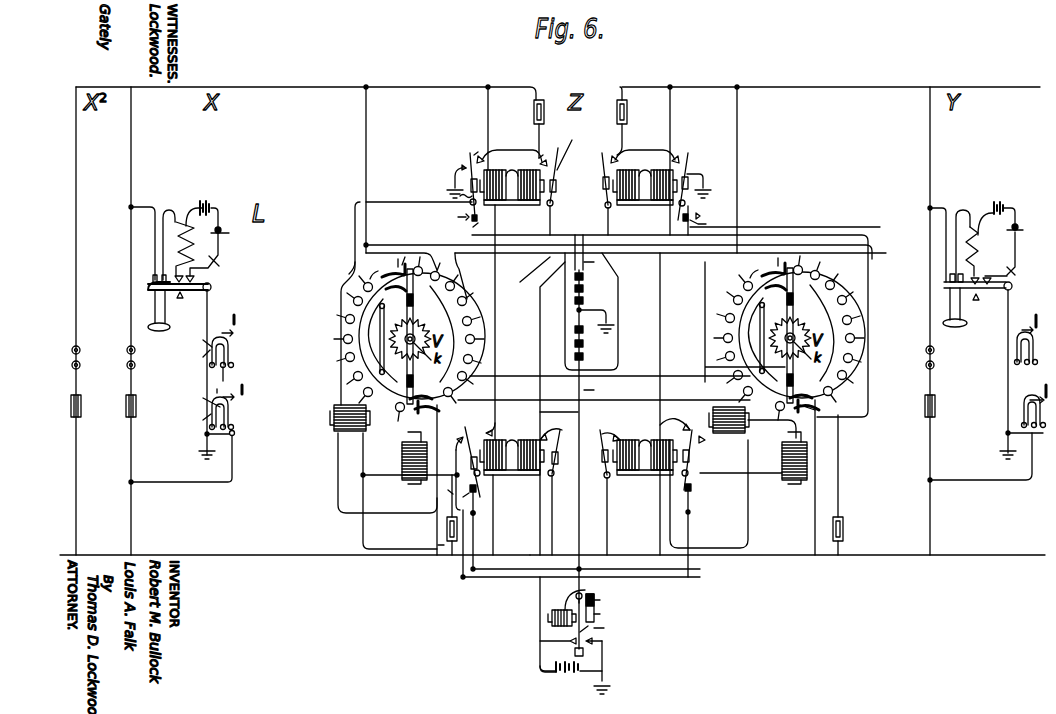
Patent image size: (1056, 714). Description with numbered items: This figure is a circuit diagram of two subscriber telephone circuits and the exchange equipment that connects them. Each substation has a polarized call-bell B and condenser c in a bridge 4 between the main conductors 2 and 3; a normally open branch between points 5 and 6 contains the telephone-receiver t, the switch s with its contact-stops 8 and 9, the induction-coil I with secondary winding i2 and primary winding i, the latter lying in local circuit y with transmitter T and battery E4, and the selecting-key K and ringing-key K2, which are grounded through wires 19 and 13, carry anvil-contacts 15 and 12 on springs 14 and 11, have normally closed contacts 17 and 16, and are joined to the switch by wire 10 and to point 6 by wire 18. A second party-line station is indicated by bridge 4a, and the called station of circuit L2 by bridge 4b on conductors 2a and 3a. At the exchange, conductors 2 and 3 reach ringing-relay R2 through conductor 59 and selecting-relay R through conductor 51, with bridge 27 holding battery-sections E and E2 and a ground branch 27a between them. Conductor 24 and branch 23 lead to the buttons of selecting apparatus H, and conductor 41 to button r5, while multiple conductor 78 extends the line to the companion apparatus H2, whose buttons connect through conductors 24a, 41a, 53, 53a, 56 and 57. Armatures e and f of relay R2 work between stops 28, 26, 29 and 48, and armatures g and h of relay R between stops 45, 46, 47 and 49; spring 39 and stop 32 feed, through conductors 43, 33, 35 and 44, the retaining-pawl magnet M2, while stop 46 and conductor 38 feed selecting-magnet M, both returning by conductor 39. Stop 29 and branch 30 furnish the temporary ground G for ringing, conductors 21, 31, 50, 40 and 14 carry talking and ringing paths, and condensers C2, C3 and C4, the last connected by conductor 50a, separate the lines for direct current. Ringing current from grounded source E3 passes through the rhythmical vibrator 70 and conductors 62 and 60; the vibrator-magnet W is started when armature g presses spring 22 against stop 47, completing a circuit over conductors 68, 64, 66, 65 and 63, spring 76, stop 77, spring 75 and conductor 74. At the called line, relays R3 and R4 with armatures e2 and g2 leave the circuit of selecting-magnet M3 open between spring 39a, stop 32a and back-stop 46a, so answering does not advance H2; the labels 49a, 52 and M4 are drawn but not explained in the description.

The main conductor 2 is at (349, 85).
The line conductor 2a is at (831, 76).
The main conductor 3 is at (295, 567).
The main-line conductor 3a is at (787, 565).
The bridge 4 is at (137, 321).
The bridge 4a is at (85, 321).
The bridge 4b is at (980, 321).
The bridge point 5 is at (135, 240).
The bridge point 6 is at (124, 481).
The upper switch-contact stop 8 is at (175, 273).
The contact-stop 9 is at (195, 274).
The wire 10 is at (213, 369).
The spring 11 is at (201, 340).
The anvil-contact 12 is at (225, 322).
The wire 13 is at (200, 420).
The spring 14 is at (381, 328).
The anvil-contact 15 is at (233, 387).
The separable contact 16 is at (200, 357).
The separable contact 17 is at (204, 400).
The wire 18 is at (181, 468).
The wire 19 is at (229, 439).
The conductor 21 is at (406, 294).
The spring 22 is at (477, 523).
The branch conductor 23 is at (400, 254).
The conductor 24 is at (376, 169).
The conductor 24a is at (717, 169).
The forward stop 26 is at (550, 140).
The bridge conductor 27 is at (591, 419).
The ground branch 27a is at (596, 308).
The forward stop 28 is at (482, 145).
The back contact-stop 29 is at (454, 168).
The ground branch 30 is at (456, 184).
The conductor 31 is at (524, 223).
The auxiliary contact-stop 32 is at (459, 211).
The contact-stop 32a is at (710, 196).
The conductor 33 is at (465, 276).
The conductor 35 is at (410, 467).
The conductor 38 is at (400, 491).
The spring 39 is at (417, 365).
The spring 39a is at (781, 214).
The conductor 40 is at (552, 404).
The conductor 41 is at (431, 543).
The conductor 41a is at (802, 477).
The conductor 43 is at (670, 317).
The conductor 44 is at (505, 322).
The front stop 45 is at (486, 425).
The back stop 46 is at (460, 432).
The back stop 46a is at (703, 444).
The stop 47 is at (463, 480).
The back-stop 48 is at (572, 147).
The front stop 49 is at (559, 431).
The contact 49a is at (675, 404).
The conductor 50 is at (444, 488).
The conductor 50a is at (850, 485).
The conductor 51 is at (535, 481).
The conductor 52 is at (559, 413).
The conductor 53 is at (445, 480).
The conductor 53a is at (610, 327).
The conductor 56 is at (604, 391).
The conductor 57 is at (610, 367).
The conductor 59 is at (497, 127).
The conductor 60 is at (563, 515).
The conductor 62 is at (587, 564).
The conductor 63 is at (586, 564).
The conductor 64 is at (581, 586).
The conductor 65 is at (482, 568).
The conductor 66 is at (455, 577).
The conductor 68 is at (539, 624).
The rhythmical vibrator 70 is at (590, 657).
The conductor 74 is at (582, 654).
The spring 75 is at (601, 607).
The spring 76 is at (603, 624).
The stop 77 is at (603, 633).
The multiple conductor 78 is at (632, 252).
The polarized call-bell B is at (502, 357).
The condenser c is at (509, 406).
The condenser C2 is at (549, 128).
The condenser C3 is at (439, 515).
The condenser C4 is at (851, 529).
The battery-section E is at (586, 288).
The battery-section E2 is at (590, 343).
The grounded source of ringing current E3 is at (575, 681).
The local transmitter-battery E4 is at (209, 207).
The temporary ground G is at (600, 326).
The selective and switching apparatus H is at (398, 339).
The selective and switching apparatus H2 is at (806, 338).
The induction-coil I is at (191, 208).
The selecting-key K is at (235, 411).
The ringing-key K2 is at (235, 351).
The telephone-circuit L2 is at (962, 326).
The selecting-magnet M is at (340, 416).
The retaining-pawl magnet M2 is at (400, 458).
The selecting-magnet M3 is at (733, 477).
The motor magnet M4 is at (783, 458).
The selecting-relay R is at (514, 467).
The ringing-relay R2 is at (512, 195).
The ringing-relay R3 is at (640, 167).
The relay R4 is at (638, 492).
The transmitter T is at (226, 235).
The vibrator-magnet W is at (566, 616).
The armature e is at (469, 175).
The armature e2 is at (692, 185).
The armature f is at (553, 191).
The armature g is at (475, 502).
The armature g2 is at (698, 503).
The armature h is at (556, 453).
The primary winding i is at (188, 249).
The secondary winding i2 is at (169, 245).
The button r5 is at (812, 413).
The switch s is at (185, 302).
The telephone-receiver t is at (174, 303).
The local circuit y is at (211, 254).